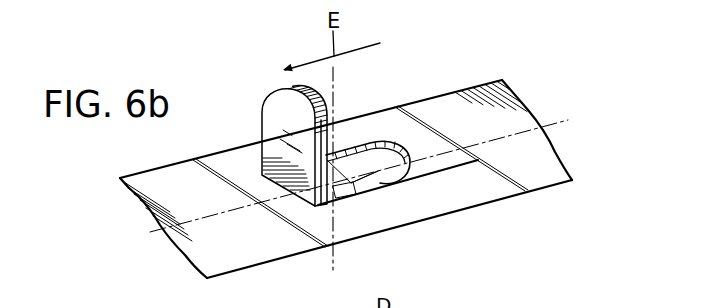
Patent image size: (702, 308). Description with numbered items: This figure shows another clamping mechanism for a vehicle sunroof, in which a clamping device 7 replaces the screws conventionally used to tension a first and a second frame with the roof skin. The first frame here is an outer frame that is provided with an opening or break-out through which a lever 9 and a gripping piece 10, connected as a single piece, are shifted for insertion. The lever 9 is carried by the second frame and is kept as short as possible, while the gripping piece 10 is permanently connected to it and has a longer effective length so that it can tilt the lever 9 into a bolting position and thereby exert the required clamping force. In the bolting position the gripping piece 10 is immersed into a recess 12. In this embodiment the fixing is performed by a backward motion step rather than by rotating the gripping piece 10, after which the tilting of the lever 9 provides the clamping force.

The clamping device 7 is at (266, 72).
The lever 9 is at (332, 196).
The gripping piece 10 is at (280, 116).
The recess 12 is at (379, 178).